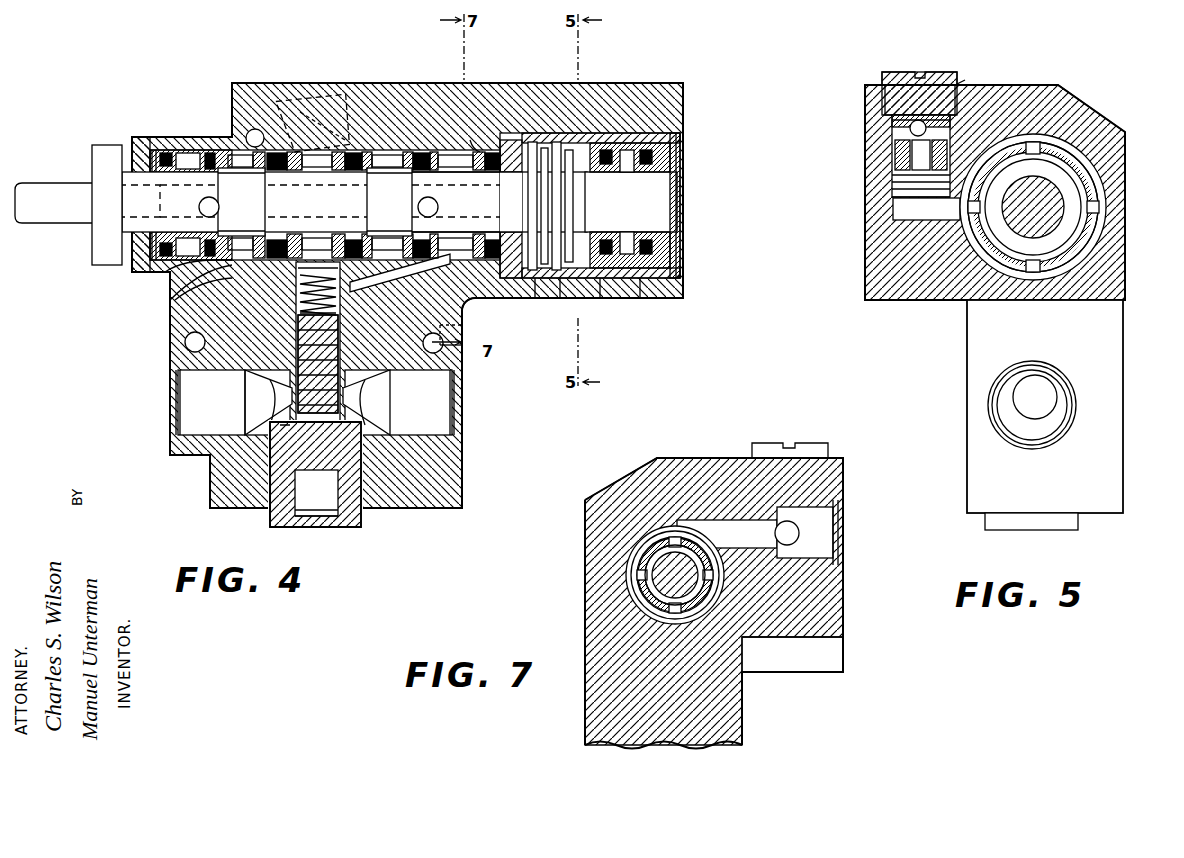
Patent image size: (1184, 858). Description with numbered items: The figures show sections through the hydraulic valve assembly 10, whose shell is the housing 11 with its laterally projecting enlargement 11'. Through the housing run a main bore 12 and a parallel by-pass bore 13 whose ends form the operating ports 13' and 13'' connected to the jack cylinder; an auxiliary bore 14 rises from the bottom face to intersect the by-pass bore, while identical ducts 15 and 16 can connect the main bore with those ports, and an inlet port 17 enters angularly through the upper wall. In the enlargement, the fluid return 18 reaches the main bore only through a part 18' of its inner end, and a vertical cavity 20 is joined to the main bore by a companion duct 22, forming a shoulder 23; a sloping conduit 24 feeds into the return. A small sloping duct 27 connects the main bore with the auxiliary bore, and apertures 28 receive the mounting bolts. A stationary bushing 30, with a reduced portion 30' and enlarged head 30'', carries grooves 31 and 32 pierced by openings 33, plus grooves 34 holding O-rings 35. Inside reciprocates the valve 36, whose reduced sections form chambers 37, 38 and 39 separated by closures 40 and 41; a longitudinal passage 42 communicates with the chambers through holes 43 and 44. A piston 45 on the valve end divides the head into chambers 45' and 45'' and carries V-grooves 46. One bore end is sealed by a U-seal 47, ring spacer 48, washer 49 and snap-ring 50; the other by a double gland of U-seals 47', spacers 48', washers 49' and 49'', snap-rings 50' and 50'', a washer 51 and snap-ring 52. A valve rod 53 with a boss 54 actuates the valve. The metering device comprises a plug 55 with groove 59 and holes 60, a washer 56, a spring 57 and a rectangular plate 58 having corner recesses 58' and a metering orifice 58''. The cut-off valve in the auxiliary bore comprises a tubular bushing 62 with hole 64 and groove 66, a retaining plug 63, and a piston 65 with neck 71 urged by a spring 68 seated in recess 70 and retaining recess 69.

In FIG. 4, the valve assembly 10 is at (228, 118).
In FIG. 4, the housing 11 is at (407, 288).
In FIG. 5, the housing 11 is at (1030, 406).
In FIG. 7, the housing 11 is at (714, 603).
In FIG. 4, the enlargement 11' is at (590, 172).
In FIG. 5, the enlargement 11' is at (995, 208).
In FIG. 7, the enlargement 11' is at (808, 649).
In FIG. 4, the main bore 12 is at (136, 142).
In FIG. 4, the by-pass bore 13 is at (294, 402).
In FIG. 5, the by-pass bore 13 is at (1046, 405).
In FIG. 4, the port 13' is at (159, 402).
In FIG. 4, the port 13'' is at (476, 402).
In FIG. 5, the port 13'' is at (1006, 452).
In FIG. 4, the auxiliary bore 14 is at (362, 520).
In FIG. 4, the duct 15 is at (175, 327).
In FIG. 4, the duct 16 is at (465, 360).
In FIG. 4, the inlet port 17 is at (332, 90).
In FIG. 4, the fluid return 18 is at (476, 109).
In FIG. 7, the fluid return 18 is at (780, 503).
In FIG. 7, the part of the inner extremity of the passage 18' is at (636, 575).
In FIG. 5, the vertical cavity 20 is at (873, 110).
In FIG. 5, the companion duct 22 is at (900, 210).
In FIG. 5, the shoulder 23 is at (892, 200).
In FIG. 7, the sloping conduit 24 is at (800, 540).
In FIG. 4, the duct 27 is at (470, 305).
In FIG. 4, the aperture 28 is at (246, 135).
In FIG. 4, the bushing 30 is at (606, 299).
In FIG. 4, the reduced portion 30' is at (189, 293).
In FIG. 7, the reduced portion 30' is at (639, 575).
In FIG. 4, the head portion 30'' is at (648, 299).
In FIG. 5, the head portion 30'' is at (1064, 207).
In FIG. 4, the annular groove 31 is at (287, 150).
In FIG. 7, the annular groove 31 is at (640, 590).
In FIG. 4, the groove 32 is at (552, 140).
In FIG. 5, the groove 32 is at (1098, 237).
In FIG. 4, the opening 33 is at (300, 150).
In FIG. 5, the opening 33 is at (1100, 190).
In FIG. 7, the opening 33 is at (668, 612).
In FIG. 4, the annular groove 34 is at (532, 140).
In FIG. 4, the O-ring 35 is at (545, 150).
In FIG. 4, the valve 36 is at (122, 235).
In FIG. 5, the valve 36 is at (1080, 180).
In FIG. 7, the valve 36 is at (660, 565).
In FIG. 4, the chamber 37 is at (190, 152).
In FIG. 5, the chamber 37 is at (895, 170).
In FIG. 4, the chamber 38 is at (384, 150).
In FIG. 4, the chamber 39 is at (470, 182).
In FIG. 7, the chamber 39 is at (650, 606).
In FIG. 4, the closure 40 is at (241, 202).
In FIG. 4, the closure 41 is at (389, 202).
In FIG. 4, the passage 42 is at (95, 184).
In FIG. 4, the transverse hole 43 is at (438, 207).
In FIG. 4, the hole 44 is at (218, 207).
In FIG. 5, the hole 44 is at (986, 100).
In FIG. 4, the piston 45 is at (535, 206).
In FIG. 5, the piston 45 is at (1054, 163).
In FIG. 4, the chamber 45' is at (530, 206).
In FIG. 4, the chamber 45'' is at (581, 206).
In FIG. 4, the V-groove 46 is at (585, 218).
In FIG. 4, the U-seal 47 is at (171, 190).
In FIG. 4, the U-seal 47' is at (611, 202).
In FIG. 4, the ring spacer 48 is at (415, 181).
In FIG. 4, the ring spacer 48' is at (625, 205).
In FIG. 4, the washer 49 is at (150, 191).
In FIG. 4, the washer 49' is at (566, 296).
In FIG. 4, the washer 49'' is at (640, 202).
In FIG. 4, the snap-ring 50 is at (144, 183).
In FIG. 4, the snap-ring 50' is at (541, 296).
In FIG. 4, the snap-ring 50'' is at (648, 202).
In FIG. 4, the washer 51 is at (683, 255).
In FIG. 4, the snap-ring 52 is at (683, 268).
In FIG. 4, the valve rod 53 is at (53, 203).
In FIG. 4, the boss or nut 54 is at (100, 150).
In FIG. 5, the plug 55 is at (952, 74).
In FIG. 7, the plug 55 is at (824, 455).
In FIG. 5, the washer 56 is at (890, 185).
In FIG. 4, the spring 57 is at (340, 285).
In FIG. 4, the rectangular plate 58 is at (318, 342).
In FIG. 5, the rectangular plate 58 is at (894, 156).
In FIG. 5, the recess 58' is at (883, 155).
In FIG. 5, the metering orifice 58'' is at (884, 130).
In FIG. 5, the peripheral groove 59 is at (880, 118).
In FIG. 5, the hole 60 is at (962, 92).
In FIG. 4, the tubular bushing 62 is at (240, 462).
In FIG. 4, the retaining plug 63 is at (355, 530).
In FIG. 5, the retaining plug 63 is at (1060, 520).
In FIG. 4, the hole 64 is at (262, 405).
In FIG. 4, the piston 65 is at (326, 475).
In FIG. 4, the groove 66 is at (465, 330).
In FIG. 4, the spring 68 is at (326, 311).
In FIG. 4, the retaining recess 69 is at (300, 292).
In FIG. 4, the recess 70 is at (355, 398).
In FIG. 4, the neck 71 is at (275, 392).